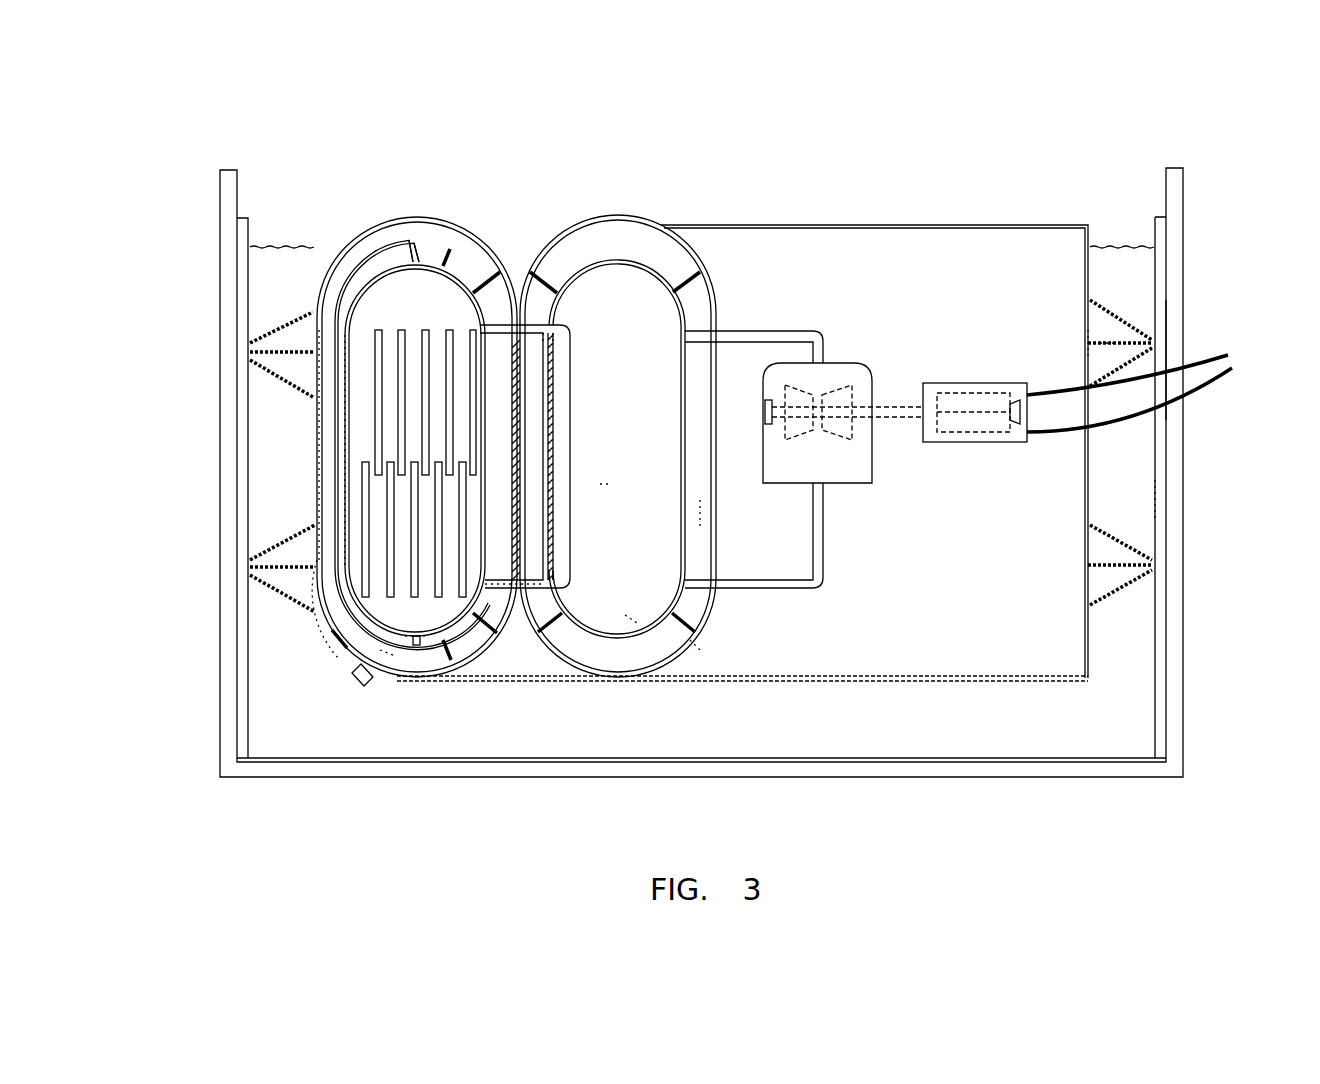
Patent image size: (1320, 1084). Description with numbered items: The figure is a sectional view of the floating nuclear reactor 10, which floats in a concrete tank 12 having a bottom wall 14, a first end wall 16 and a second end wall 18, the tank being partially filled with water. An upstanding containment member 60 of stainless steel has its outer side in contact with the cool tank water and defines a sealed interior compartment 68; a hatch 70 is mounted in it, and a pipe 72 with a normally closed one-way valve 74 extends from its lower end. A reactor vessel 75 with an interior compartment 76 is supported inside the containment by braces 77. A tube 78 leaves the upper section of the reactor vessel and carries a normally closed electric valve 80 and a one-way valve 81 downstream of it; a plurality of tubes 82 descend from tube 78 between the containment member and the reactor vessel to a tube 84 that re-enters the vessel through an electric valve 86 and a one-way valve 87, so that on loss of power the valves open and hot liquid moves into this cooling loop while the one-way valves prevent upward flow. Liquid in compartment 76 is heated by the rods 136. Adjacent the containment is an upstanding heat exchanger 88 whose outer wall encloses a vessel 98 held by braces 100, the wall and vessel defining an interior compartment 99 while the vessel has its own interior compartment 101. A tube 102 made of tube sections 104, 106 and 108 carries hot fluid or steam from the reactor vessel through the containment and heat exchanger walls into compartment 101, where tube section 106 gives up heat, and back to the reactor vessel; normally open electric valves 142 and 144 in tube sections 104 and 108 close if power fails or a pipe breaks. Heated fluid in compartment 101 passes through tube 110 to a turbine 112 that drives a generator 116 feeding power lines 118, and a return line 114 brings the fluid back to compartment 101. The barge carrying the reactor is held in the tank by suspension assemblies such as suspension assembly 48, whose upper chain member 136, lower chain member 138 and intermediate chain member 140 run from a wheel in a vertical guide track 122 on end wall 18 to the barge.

The floating nuclear reactor 10 is at (827, 188).
The concrete tank 12 is at (197, 468).
The bottom wall 14 is at (610, 772).
The first end wall 16 is at (225, 603).
The second end wall 18 is at (1180, 280).
The suspension assembly 48 is at (1125, 299).
The containment member 60 is at (300, 414).
The interior compartment 68 is at (472, 648).
The hatch 70 is at (335, 655).
The pipe 72 is at (395, 655).
The one-way valve 74 is at (355, 685).
The reactor vessel 75 is at (462, 254).
The interior compartment 76 is at (378, 310).
The braces 77 is at (504, 312).
The tube 78 is at (418, 264).
The electric valve 80 is at (410, 258).
The one-way valve 81 is at (353, 266).
The tubes 82 is at (362, 222).
The tube 84 is at (435, 642).
The electric valve 86 is at (418, 640).
The one-way valve 87 is at (412, 645).
The heat exchanger 88 is at (724, 268).
The vessel 98 is at (701, 377).
The interior compartment 99 is at (700, 513).
The braces 100 is at (683, 632).
The interior compartment 101 is at (633, 620).
The tube 102 is at (540, 328).
The tube section 104 is at (556, 325).
The tube section 106 is at (600, 484).
The tube section 108 is at (523, 587).
The tube 110 is at (800, 333).
The turbine 112 is at (849, 365).
The return line 114 is at (835, 538).
The generator 116 is at (1008, 368).
The power lines 118 is at (1220, 352).
The guide track 122 is at (1163, 498).
The upper chain member 136 is at (390, 498).
The lower chain member 138 is at (1087, 343).
The intermediate chain member 140 is at (1108, 337).
The electric valve 142 is at (547, 322).
The electric valve 144 is at (515, 590).